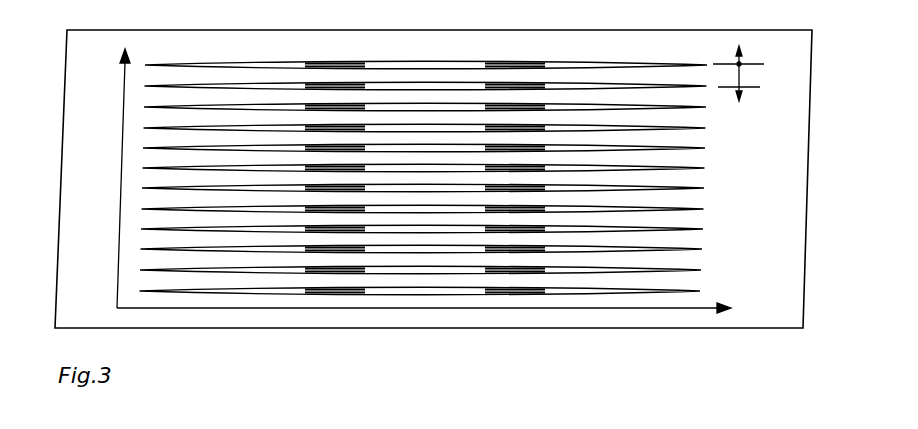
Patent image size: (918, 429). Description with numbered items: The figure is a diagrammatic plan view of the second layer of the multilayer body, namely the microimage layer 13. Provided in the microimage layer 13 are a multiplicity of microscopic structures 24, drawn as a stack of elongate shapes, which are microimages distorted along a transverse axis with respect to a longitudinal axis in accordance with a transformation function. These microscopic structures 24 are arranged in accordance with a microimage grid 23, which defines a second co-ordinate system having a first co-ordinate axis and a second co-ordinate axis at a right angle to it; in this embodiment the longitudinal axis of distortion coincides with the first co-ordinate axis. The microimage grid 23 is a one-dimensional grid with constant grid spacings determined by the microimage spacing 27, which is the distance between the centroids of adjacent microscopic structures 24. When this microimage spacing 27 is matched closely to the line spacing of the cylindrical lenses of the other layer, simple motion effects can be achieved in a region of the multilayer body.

The microimage layer 13 is at (53, 173).
The microimage grid 23 is at (136, 138).
The microscopic structures 24 is at (607, 59).
The microimage spacing 27 is at (740, 69).